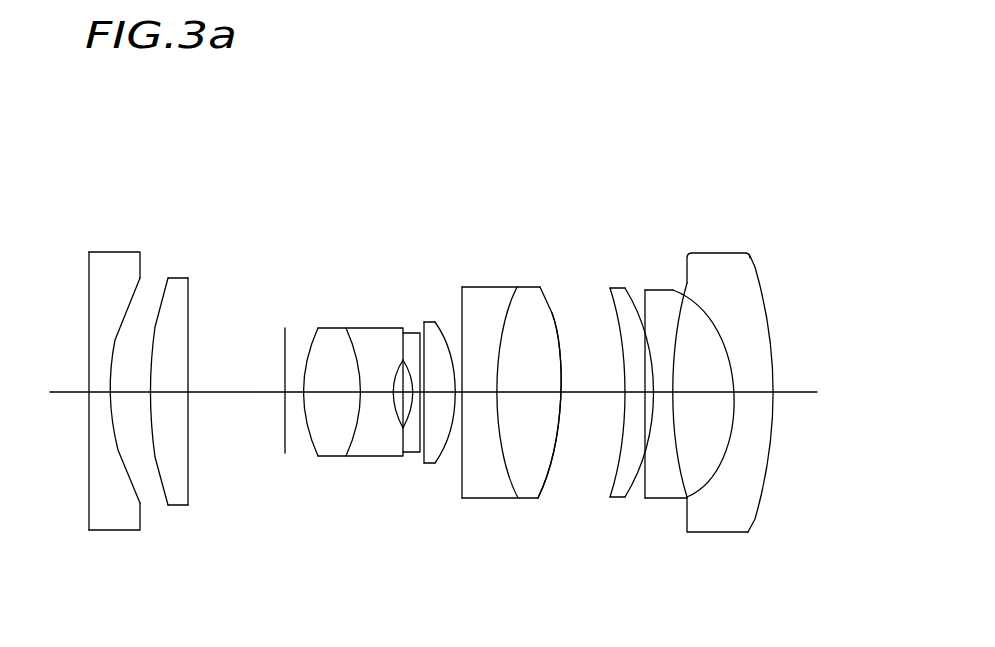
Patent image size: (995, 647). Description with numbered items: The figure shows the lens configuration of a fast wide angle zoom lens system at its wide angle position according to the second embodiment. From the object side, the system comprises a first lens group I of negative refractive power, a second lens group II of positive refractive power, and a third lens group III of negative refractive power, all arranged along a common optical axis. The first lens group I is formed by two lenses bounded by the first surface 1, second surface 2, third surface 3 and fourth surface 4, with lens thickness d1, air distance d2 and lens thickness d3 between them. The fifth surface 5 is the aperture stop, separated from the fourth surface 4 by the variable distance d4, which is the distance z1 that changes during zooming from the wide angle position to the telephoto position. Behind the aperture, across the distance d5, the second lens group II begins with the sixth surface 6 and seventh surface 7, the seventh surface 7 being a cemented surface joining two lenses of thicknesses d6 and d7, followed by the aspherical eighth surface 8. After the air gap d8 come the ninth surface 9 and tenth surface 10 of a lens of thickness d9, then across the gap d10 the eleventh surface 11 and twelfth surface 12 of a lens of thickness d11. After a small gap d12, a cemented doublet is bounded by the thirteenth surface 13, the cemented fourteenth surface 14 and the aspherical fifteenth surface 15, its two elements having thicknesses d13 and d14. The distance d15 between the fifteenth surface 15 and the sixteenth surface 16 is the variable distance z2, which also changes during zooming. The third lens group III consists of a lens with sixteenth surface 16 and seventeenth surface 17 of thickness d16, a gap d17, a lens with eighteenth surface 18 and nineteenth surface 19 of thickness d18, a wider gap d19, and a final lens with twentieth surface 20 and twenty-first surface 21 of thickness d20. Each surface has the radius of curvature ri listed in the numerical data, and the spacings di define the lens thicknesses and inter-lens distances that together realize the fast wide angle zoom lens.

The first lens group I is at (215, 199).
The second lens group II is at (650, 119).
The third lens group III is at (845, 209).
The first surface 1 is at (88, 375).
The second surface 2 is at (115, 390).
The third surface 3 is at (156, 329).
The fourth surface 4 is at (188, 330).
The fifth surface 5 is at (284, 365).
The sixth surface 6 is at (307, 338).
The seventh surface 7 is at (346, 345).
The eighth surface 8 is at (396, 372).
The ninth surface 9 is at (405, 332).
The tenth surface 10 is at (434, 321).
The eleventh surface 11 is at (424, 320).
The twelfth surface 12 is at (462, 338).
The thirteenth surface 13 is at (517, 287).
The fourteenth surface 14 is at (535, 287).
The fifteenth surface 15 is at (553, 313).
The sixteenth surface 16 is at (615, 320).
The seventeenth surface 17 is at (632, 300).
The eighteenth surface 18 is at (648, 335).
The nineteenth surface 19 is at (680, 342).
The twentieth surface 20 is at (728, 340).
The twenty-first surface 21 is at (773, 337).
The lens thickness d1 is at (97, 392).
The distance d2 is at (151, 392).
The lens thickness d3 is at (176, 392).
The distance d4 is at (249, 392).
The distance d5 is at (297, 392).
The lens thickness d6 is at (334, 392).
The lens thickness d7 is at (379, 392).
The distance d8 is at (404, 392).
The lens thickness d9 is at (417, 392).
The distance d10 is at (429, 392).
The lens thickness d11 is at (437, 392).
The distance d12 is at (457, 392).
The lens thickness d13 is at (482, 392).
The lens thickness d14 is at (532, 392).
The distance d15 is at (593, 392).
The lens thickness d16 is at (640, 392).
The distance d17 is at (654, 392).
The lens thickness d18 is at (665, 392).
The distance d19 is at (703, 393).
The lens thickness d20 is at (748, 393).